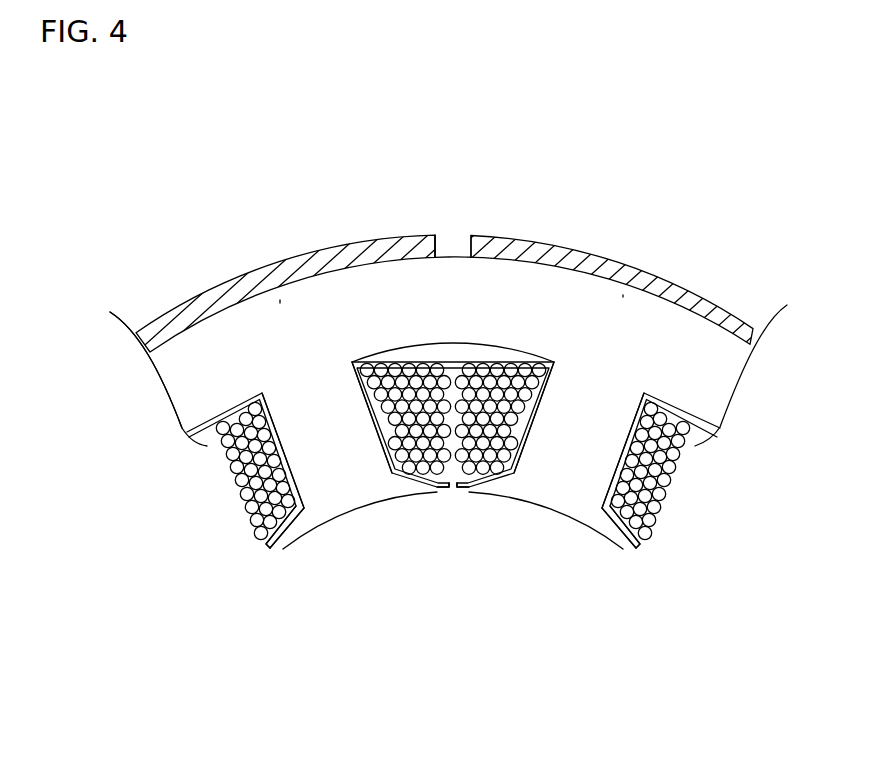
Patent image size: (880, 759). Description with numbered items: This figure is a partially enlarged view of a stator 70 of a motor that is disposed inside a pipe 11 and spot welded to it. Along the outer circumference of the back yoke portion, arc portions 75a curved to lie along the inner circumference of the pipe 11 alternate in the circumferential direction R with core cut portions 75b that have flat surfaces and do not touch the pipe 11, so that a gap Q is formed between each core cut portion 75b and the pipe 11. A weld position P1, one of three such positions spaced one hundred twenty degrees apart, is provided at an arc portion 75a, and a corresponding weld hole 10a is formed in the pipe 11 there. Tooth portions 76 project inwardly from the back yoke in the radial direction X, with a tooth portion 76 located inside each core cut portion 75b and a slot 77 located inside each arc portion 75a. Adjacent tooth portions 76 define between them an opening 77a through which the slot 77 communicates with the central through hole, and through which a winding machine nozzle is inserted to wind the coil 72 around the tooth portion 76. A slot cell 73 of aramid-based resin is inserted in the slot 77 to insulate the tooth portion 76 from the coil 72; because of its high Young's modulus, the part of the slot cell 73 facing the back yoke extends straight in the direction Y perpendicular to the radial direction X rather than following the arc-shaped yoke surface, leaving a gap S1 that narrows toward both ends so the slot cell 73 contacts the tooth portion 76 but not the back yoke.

The stator core 70 is at (389, 631).
The coil 72 is at (242, 487).
The slot cell 73 is at (274, 556).
The tooth portion 76 is at (332, 445).
The slot 77 is at (453, 380).
The opening 77a is at (432, 490).
The arc portion 75a is at (457, 253).
The core cut portion 75b is at (258, 302).
The weld hole 10a is at (436, 248).
The pipe 11 is at (182, 300).
The gap Q is at (280, 303).
The weld position P1 is at (456, 172).
The gap S1 is at (459, 339).
The circumferential direction R is at (154, 271).
The radial direction X is at (453, 613).
The direction perpendicular to the radial direction Y is at (471, 293).